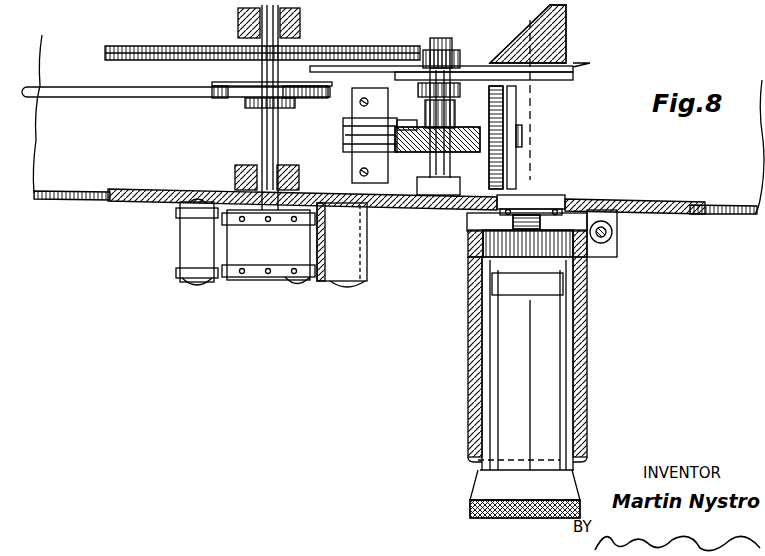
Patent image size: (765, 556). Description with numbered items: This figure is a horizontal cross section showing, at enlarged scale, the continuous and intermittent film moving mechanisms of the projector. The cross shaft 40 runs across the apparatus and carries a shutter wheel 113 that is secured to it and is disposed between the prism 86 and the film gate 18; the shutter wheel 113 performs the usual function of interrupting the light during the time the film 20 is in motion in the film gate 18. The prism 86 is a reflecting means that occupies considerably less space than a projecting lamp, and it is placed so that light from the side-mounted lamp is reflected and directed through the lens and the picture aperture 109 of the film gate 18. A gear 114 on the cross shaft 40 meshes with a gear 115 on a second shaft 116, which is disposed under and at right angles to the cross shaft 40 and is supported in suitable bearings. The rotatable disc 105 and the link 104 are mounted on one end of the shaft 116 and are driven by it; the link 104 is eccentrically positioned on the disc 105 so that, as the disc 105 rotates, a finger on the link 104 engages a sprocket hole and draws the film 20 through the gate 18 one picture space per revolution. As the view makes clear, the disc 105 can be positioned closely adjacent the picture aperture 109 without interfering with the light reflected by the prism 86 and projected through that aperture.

The film gate 18 is at (448, 240).
The film 20 is at (572, 206).
The cross shaft 40 is at (436, 40).
The prism 86 is at (625, 25).
The link 104 is at (530, 190).
The rotatable disc 105 is at (503, 113).
The picture aperture 109 is at (540, 205).
The shutter wheel 113 is at (467, 70).
The gear 114 is at (460, 130).
The gear 115 is at (457, 110).
The shaft 116 is at (352, 131).